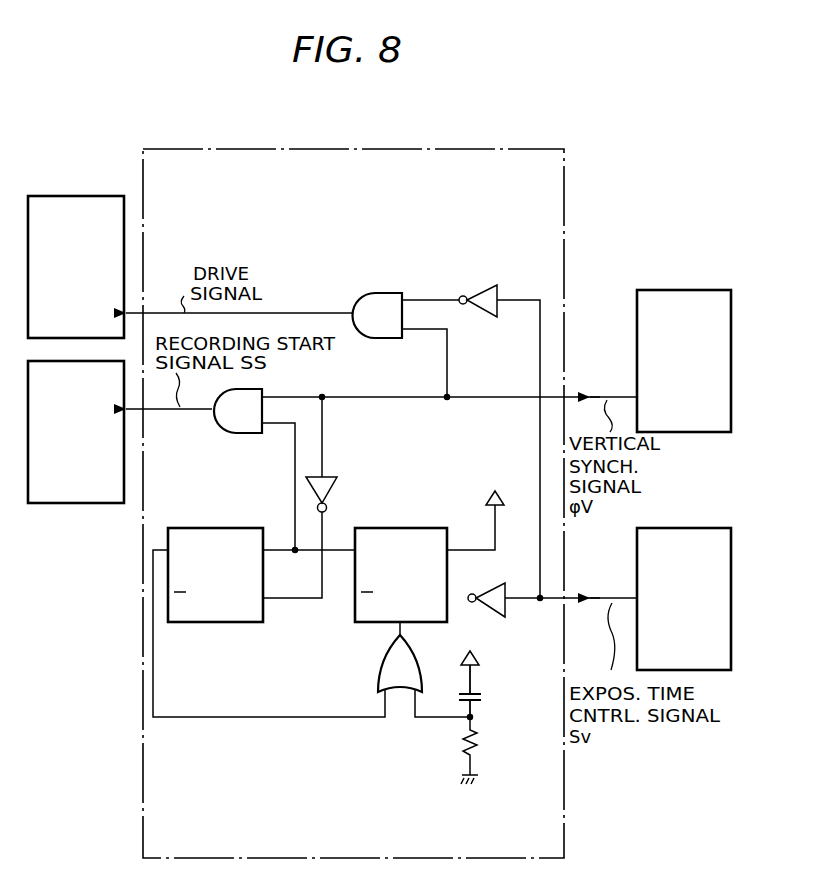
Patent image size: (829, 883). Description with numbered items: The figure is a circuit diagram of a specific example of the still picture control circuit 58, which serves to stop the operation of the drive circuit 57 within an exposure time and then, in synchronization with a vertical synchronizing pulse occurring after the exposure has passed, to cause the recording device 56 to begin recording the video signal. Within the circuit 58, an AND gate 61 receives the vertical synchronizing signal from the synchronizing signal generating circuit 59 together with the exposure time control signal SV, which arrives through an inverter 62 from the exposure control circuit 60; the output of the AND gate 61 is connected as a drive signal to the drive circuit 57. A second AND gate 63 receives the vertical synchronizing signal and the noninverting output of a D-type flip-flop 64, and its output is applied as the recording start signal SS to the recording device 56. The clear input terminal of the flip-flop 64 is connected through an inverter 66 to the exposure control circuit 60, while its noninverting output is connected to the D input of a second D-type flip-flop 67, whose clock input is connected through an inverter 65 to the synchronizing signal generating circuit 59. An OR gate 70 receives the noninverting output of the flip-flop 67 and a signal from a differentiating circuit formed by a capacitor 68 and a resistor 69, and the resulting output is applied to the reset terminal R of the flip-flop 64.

The recording device 56 is at (84, 503).
The drive circuit 57 is at (81, 196).
The still picture control circuit 58 is at (305, 149).
The synchronizing signal generating circuit 59 is at (689, 290).
The exposure control circuit 60 is at (692, 528).
The AND gate 61 is at (379, 293).
The inverter 62 is at (487, 286).
The AND gate 63 is at (245, 434).
The D-type flip-flop 64 is at (404, 528).
The inverter 65 is at (336, 491).
The inverter 66 is at (490, 618).
The D-type flip-flop 67 is at (222, 528).
The capacitor 68 is at (482, 697).
The resistor 69 is at (480, 740).
The OR gate 70 is at (377, 672).